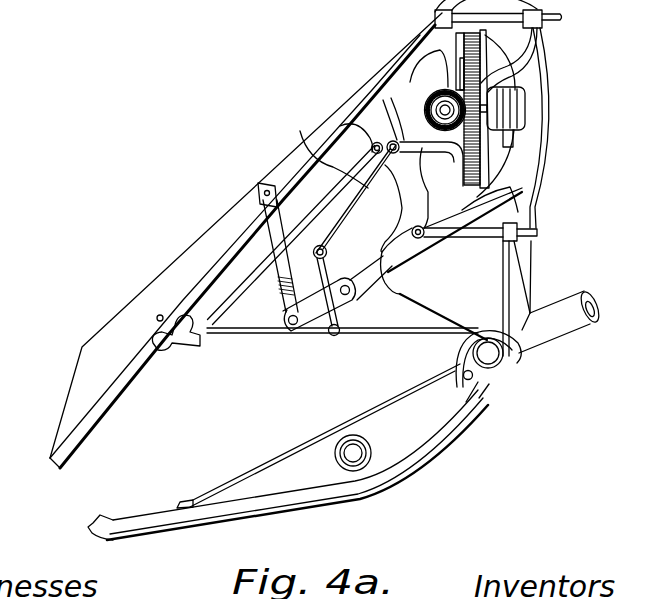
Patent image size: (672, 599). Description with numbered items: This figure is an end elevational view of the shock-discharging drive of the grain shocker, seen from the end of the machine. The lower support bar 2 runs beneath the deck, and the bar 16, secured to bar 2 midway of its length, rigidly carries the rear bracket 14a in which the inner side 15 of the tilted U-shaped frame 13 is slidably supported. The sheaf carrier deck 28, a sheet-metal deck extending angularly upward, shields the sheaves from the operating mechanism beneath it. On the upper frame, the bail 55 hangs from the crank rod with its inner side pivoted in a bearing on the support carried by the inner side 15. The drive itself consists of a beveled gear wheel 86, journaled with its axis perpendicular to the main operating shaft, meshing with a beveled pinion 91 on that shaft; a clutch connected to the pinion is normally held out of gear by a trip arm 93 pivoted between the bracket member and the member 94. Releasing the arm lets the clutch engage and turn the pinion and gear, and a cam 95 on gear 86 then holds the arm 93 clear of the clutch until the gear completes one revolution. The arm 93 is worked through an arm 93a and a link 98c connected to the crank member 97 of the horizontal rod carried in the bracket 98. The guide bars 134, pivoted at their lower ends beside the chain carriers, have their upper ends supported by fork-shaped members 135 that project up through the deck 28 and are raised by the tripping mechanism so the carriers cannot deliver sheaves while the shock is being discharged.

The bar 2 is at (353, 442).
The U-shaped frame 13 is at (571, 297).
The bracket 14a is at (485, 380).
The inner side 15 is at (502, 360).
The bar 16 is at (410, 456).
The sheaf carrier deck 28 is at (78, 423).
The bail 55 is at (562, 16).
The beveled gear wheel 86 is at (490, 147).
The beveled pinion 91 is at (472, 90).
The trip arm 93 is at (383, 100).
The arm 93a is at (302, 140).
The member 94 is at (347, 100).
The cam 95 is at (463, 72).
The crank member 97 is at (300, 332).
The bracket 98 is at (395, 261).
The link 98c is at (315, 336).
The guide bars 134 is at (117, 322).
The fork-shaped members 135 is at (273, 233).